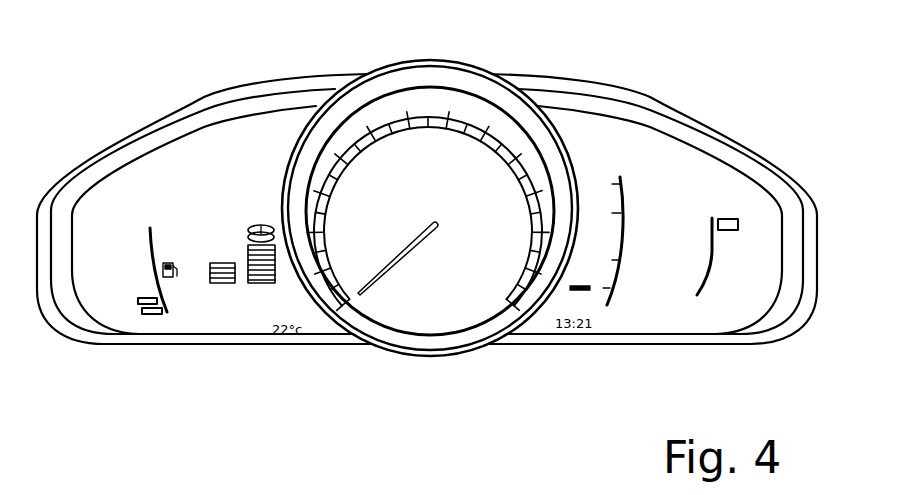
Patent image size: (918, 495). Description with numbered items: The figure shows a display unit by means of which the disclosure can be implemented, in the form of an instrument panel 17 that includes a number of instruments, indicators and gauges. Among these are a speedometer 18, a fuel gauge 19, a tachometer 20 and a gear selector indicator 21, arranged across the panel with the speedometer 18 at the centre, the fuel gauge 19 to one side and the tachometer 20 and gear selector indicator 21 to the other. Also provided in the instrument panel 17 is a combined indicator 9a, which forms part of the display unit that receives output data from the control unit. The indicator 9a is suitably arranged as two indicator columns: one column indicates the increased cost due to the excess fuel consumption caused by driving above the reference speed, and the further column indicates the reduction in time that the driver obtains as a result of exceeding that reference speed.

The instrument panel 17 is at (645, 68).
The speedometer 18 is at (458, 80).
The combined indicator 9a is at (224, 216).
The fuel gauge 19 is at (150, 264).
The tachometer 20 is at (618, 272).
The gear selector indicator 21 is at (713, 258).